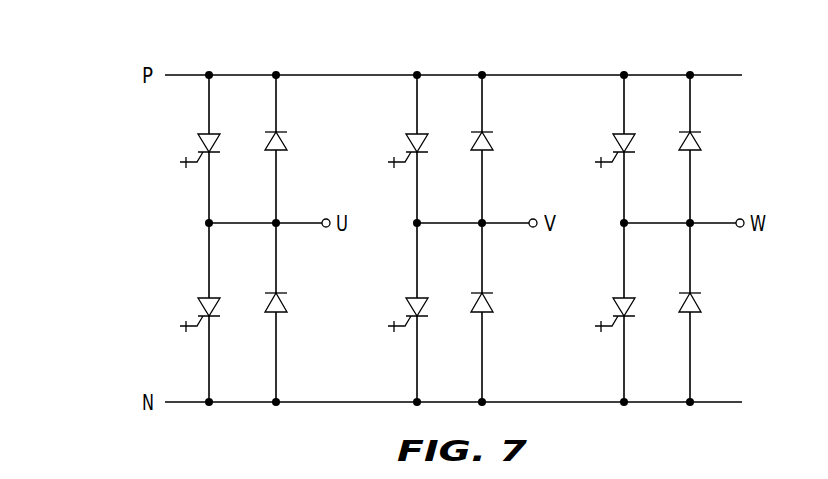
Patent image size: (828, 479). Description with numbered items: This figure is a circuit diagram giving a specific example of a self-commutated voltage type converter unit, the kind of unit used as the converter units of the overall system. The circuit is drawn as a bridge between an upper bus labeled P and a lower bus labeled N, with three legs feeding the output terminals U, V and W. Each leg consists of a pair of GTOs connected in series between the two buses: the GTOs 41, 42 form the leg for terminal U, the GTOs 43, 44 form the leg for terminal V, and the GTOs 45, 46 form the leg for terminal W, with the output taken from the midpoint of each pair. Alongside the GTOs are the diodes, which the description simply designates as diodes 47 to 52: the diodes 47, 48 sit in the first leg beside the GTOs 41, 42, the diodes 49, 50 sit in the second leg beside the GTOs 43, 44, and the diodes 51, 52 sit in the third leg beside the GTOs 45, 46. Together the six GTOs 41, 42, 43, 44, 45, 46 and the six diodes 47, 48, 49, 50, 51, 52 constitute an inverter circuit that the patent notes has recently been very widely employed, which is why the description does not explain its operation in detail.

The GTO 41 is at (199, 134).
The GTO 42 is at (199, 298).
The GTO 43 is at (407, 134).
The GTO 44 is at (407, 298).
The GTO 45 is at (614, 134).
The GTO 46 is at (614, 298).
The diode 47 is at (284, 142).
The diode 48 is at (284, 306).
The diode 49 is at (490, 141).
The diode 50 is at (490, 306).
The diode 51 is at (698, 141).
The diode 52 is at (698, 308).